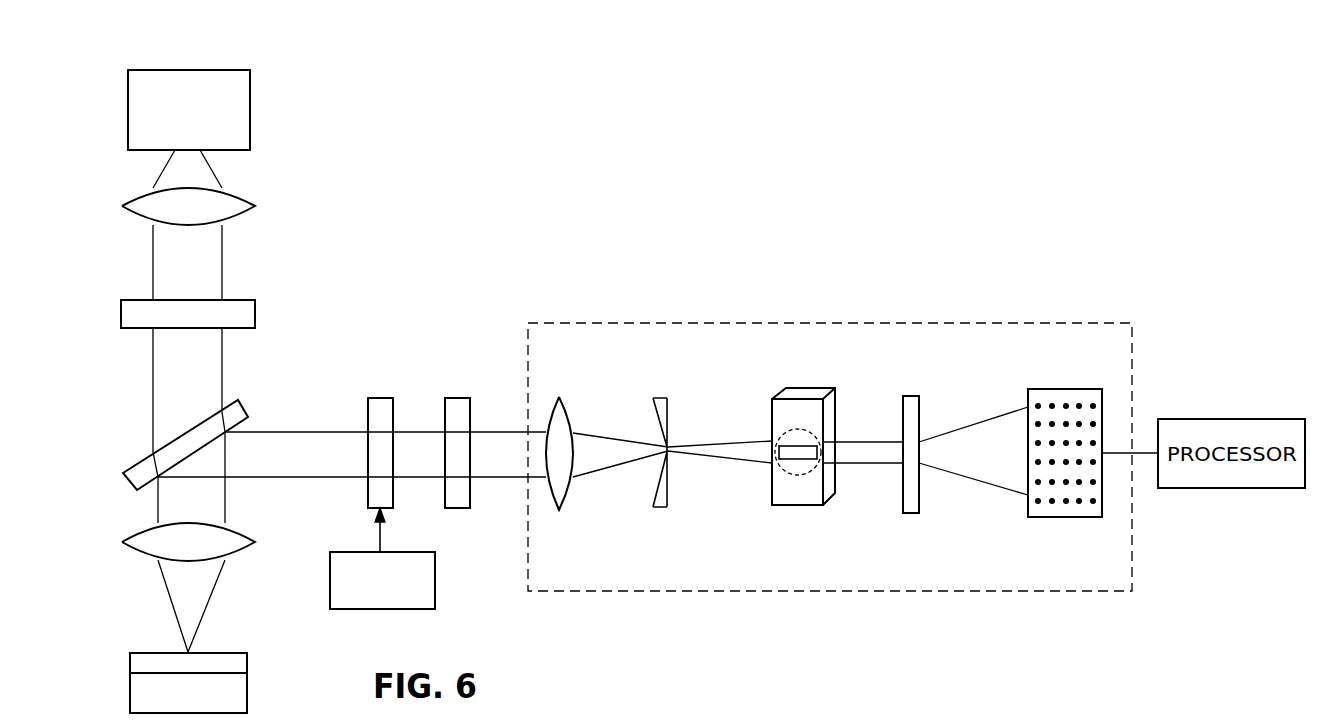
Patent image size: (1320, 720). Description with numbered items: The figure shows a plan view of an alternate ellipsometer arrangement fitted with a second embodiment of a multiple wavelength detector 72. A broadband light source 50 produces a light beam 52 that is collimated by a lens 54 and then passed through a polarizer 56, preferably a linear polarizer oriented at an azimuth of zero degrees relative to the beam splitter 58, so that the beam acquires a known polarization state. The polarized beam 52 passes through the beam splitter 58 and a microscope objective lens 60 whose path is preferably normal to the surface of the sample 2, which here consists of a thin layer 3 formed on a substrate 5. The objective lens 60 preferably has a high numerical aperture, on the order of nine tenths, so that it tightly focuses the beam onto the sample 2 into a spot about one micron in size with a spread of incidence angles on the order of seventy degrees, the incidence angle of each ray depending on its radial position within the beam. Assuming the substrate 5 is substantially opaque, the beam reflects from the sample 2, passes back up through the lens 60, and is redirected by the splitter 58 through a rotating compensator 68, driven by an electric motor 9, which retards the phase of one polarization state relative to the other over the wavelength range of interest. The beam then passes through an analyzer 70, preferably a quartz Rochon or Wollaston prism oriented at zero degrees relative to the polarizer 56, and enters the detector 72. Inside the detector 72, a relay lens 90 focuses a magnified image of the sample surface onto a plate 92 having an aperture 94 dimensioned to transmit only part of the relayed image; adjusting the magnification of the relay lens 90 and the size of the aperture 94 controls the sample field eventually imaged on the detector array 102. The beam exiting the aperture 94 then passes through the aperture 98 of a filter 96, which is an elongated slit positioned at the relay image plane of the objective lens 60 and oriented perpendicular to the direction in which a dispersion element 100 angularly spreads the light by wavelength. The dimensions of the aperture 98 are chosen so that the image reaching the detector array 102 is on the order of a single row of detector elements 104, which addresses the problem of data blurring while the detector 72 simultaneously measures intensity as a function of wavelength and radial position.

The sample 2 is at (138, 642).
The thin layer 3 is at (248, 663).
The substrate 5 is at (248, 698).
The electric motor 9 is at (436, 568).
The broadband light source 50 is at (252, 88).
The light beam 52 is at (224, 234).
The lens 54 is at (248, 196).
The polarizer 56 is at (256, 310).
The beam splitter 58 is at (243, 408).
The microscope objective lens 60 is at (244, 532).
The rotating compensator 68 is at (380, 395).
The analyzer 70 is at (458, 395).
The detector 72 is at (901, 324).
The relay lens 90 is at (570, 407).
The plate 92 is at (663, 397).
The aperture 94 is at (664, 453).
The filter 96 is at (786, 505).
The aperture 98 is at (804, 448).
The dispersion element 100 is at (912, 514).
The detector array 102 is at (1050, 518).
The detector elements 104 is at (1066, 402).